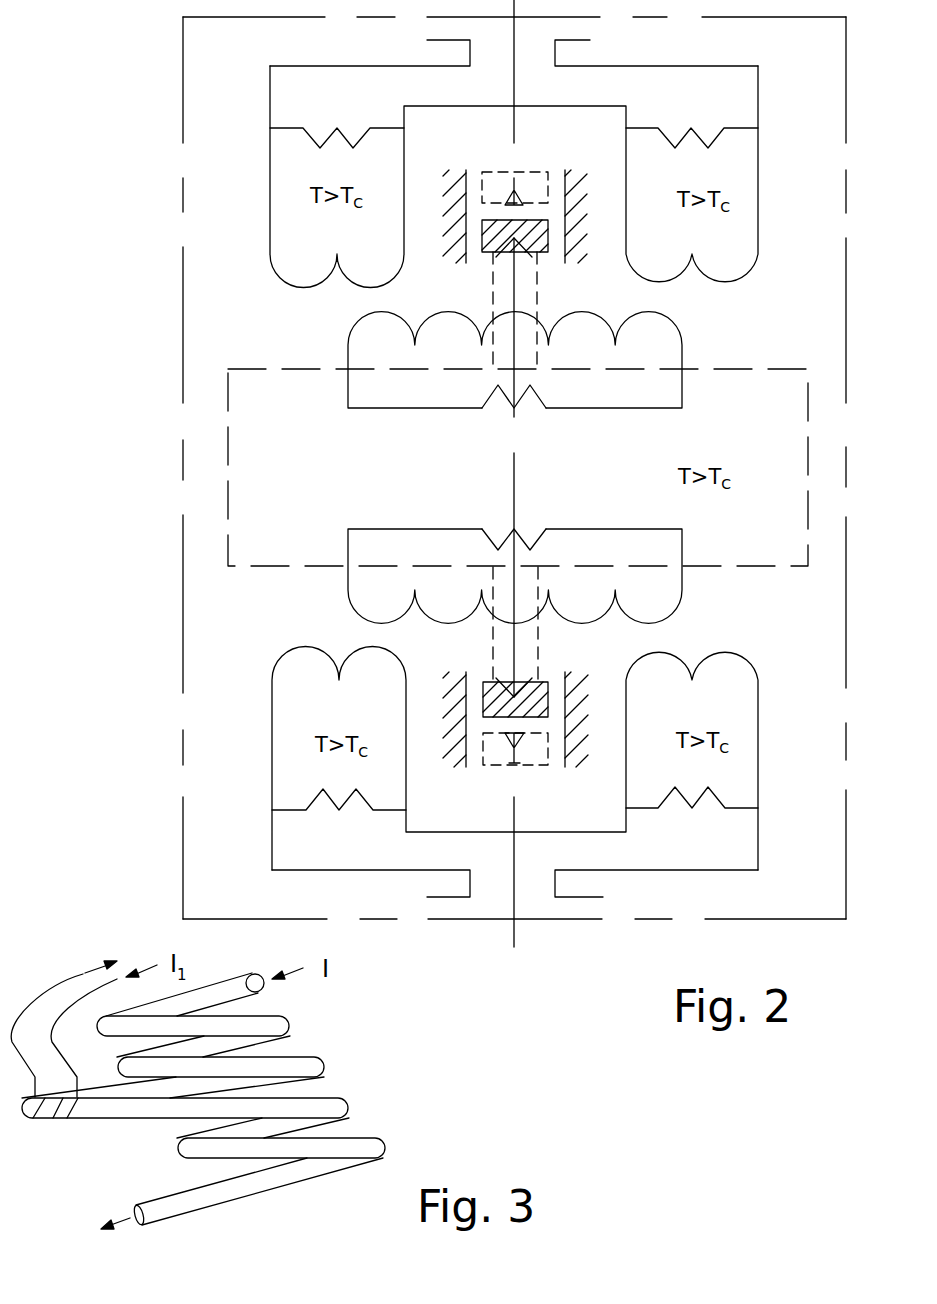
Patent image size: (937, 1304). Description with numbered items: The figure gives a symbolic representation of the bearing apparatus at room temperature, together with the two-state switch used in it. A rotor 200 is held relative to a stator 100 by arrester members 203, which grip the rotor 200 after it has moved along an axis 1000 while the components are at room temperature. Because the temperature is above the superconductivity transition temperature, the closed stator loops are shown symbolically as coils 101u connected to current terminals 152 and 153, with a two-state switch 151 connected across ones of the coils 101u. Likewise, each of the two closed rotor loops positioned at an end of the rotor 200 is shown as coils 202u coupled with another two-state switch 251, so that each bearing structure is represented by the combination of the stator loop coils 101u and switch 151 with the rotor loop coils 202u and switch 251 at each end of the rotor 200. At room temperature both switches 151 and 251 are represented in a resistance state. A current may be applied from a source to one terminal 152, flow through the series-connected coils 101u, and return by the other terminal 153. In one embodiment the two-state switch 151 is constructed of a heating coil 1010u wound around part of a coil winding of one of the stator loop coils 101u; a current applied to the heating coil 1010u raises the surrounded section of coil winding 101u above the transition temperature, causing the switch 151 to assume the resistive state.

In FIG. 2, the stator 100 is at (847, 742).
In FIG. 2, the closed stator loop coils 101u is at (288, 286).
In FIG. 3, the closed stator loop coils 101u is at (383, 1142).
In FIG. 2, the two-state switch 151 is at (340, 130).
In FIG. 3, the two-state switch 151 is at (433, 1077).
In FIG. 2, the current terminal 152 is at (427, 40).
In FIG. 2, the current terminal 153 is at (590, 40).
In FIG. 2, the rotor 200 is at (747, 368).
In FIG. 2, the closed rotor loop coils 202u is at (404, 316).
In FIG. 2, the arrester members 203 is at (548, 248).
In FIG. 2, the two-state switch 251 is at (543, 397).
In FIG. 2, the axis 1000 is at (515, 453).
In FIG. 3, the heating coil 1010u is at (64, 1058).